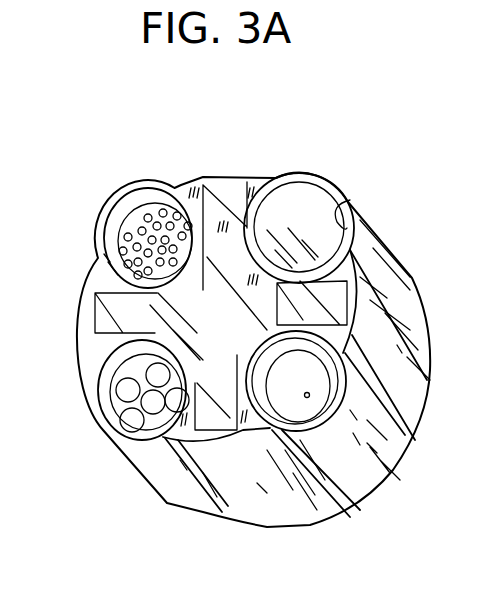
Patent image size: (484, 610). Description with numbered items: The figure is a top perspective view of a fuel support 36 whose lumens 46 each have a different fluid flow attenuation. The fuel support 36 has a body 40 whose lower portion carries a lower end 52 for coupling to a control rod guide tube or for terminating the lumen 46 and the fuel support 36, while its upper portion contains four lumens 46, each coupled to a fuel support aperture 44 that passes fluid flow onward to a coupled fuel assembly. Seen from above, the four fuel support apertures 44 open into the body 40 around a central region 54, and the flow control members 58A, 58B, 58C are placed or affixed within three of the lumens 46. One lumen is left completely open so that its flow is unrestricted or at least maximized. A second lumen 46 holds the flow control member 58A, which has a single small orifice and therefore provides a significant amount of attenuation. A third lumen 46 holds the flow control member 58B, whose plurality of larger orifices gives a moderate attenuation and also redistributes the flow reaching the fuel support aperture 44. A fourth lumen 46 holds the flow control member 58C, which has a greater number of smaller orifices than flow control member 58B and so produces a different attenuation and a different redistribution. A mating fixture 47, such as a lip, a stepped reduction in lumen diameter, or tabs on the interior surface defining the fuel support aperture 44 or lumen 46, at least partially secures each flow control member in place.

The fuel support 36 is at (188, 162).
The body 40 is at (266, 528).
The fuel support aperture 44 is at (128, 205).
The lumen 46 is at (320, 183).
The mating fixture 47 is at (137, 227).
The lower end 52 is at (407, 470).
The central body 54 is at (262, 180).
The flow control member 58A is at (300, 413).
The flow control member 58B is at (103, 432).
The flow control member 58C is at (105, 262).